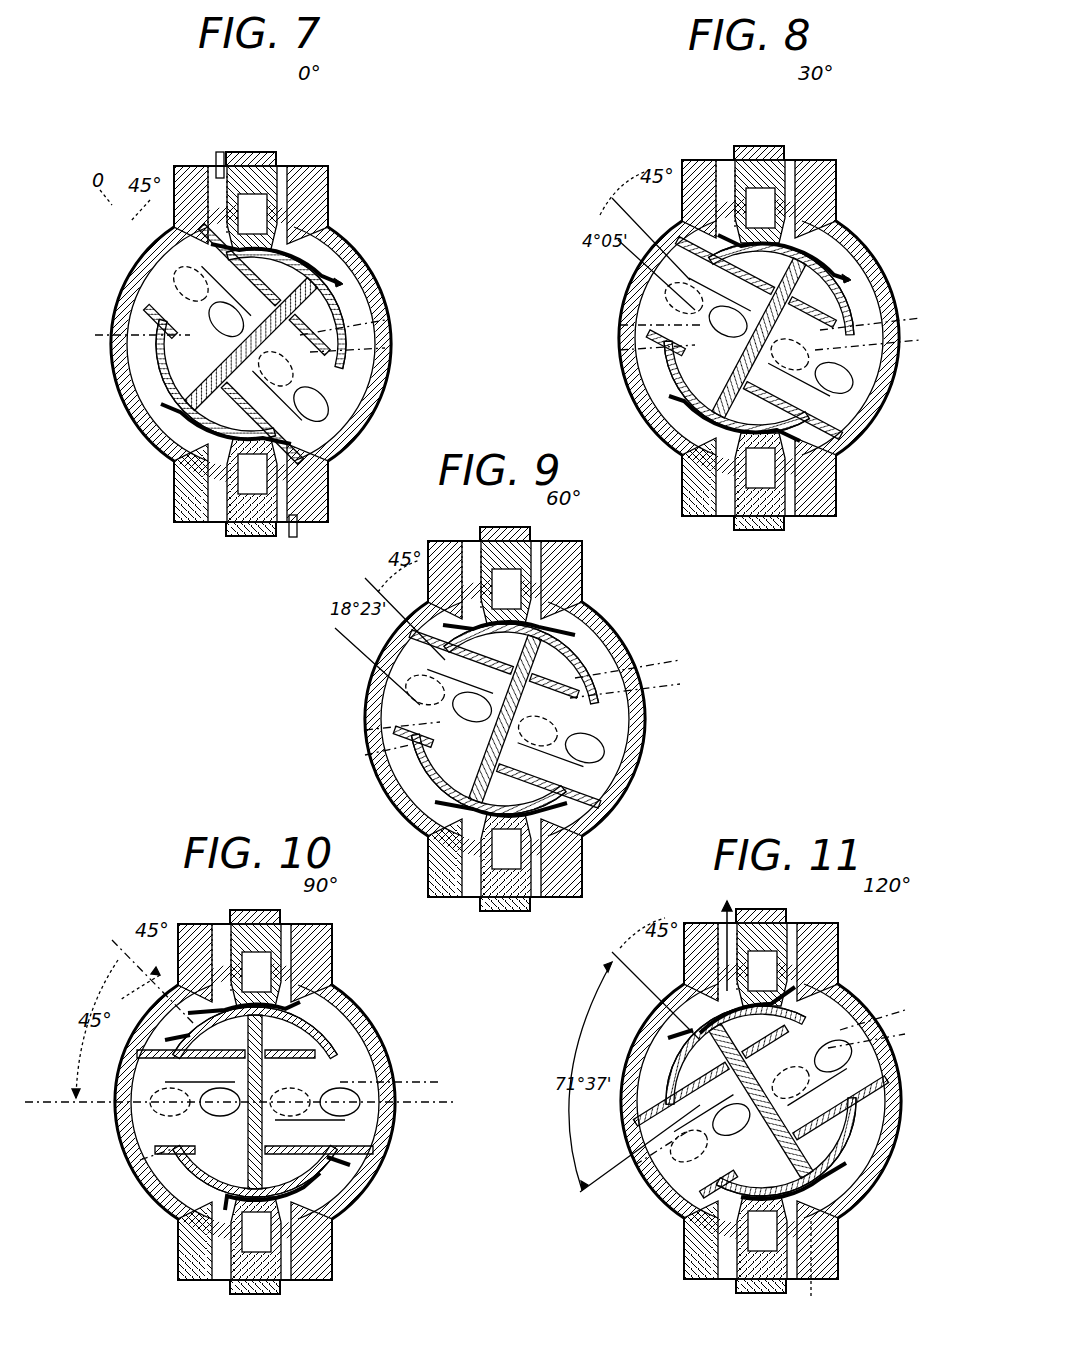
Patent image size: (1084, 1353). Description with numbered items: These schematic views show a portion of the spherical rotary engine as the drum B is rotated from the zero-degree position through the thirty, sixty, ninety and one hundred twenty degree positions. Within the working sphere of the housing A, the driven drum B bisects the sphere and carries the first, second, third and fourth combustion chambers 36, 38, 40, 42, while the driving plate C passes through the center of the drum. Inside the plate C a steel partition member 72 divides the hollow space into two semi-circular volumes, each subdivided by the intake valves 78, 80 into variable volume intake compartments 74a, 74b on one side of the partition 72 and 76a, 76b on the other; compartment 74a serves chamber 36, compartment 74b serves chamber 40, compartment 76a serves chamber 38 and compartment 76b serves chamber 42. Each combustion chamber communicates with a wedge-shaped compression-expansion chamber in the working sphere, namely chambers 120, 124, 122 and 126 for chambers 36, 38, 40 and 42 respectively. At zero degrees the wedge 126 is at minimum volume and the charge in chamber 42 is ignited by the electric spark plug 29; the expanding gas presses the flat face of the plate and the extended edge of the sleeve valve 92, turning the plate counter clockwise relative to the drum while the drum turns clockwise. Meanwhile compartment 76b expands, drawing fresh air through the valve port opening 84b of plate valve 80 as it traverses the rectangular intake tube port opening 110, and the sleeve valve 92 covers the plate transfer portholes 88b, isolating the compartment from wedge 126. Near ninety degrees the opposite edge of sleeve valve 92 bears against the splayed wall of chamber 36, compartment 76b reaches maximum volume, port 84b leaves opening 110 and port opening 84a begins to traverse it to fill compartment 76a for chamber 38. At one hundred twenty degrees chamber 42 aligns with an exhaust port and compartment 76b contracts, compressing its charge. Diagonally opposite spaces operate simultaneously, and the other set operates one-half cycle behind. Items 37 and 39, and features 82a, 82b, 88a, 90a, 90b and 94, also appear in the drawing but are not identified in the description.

In FIG. 7, the electric spark plug 29 is at (222, 158).
In FIG. 7, the first combustion chamber 36 is at (300, 192).
In FIG. 8, the first combustion chamber 36 is at (800, 198).
In FIG. 9, the first combustion chamber 36 is at (545, 580).
In FIG. 10, the first combustion chamber 36 is at (292, 968).
In FIG. 11, the first combustion chamber 36 is at (795, 970).
In FIG. 11, the vent passage 37 is at (722, 920).
In FIG. 7, the second combustion chamber 38 is at (215, 492).
In FIG. 8, the second combustion chamber 38 is at (725, 478).
In FIG. 9, the second combustion chamber 38 is at (470, 862).
In FIG. 10, the second combustion chamber 38 is at (218, 1250).
In FIG. 11, the second combustion chamber 38 is at (725, 1245).
In FIG. 11, the drain passage 39 is at (815, 1290).
In FIG. 7, the third combustion chamber 40 is at (290, 490).
In FIG. 8, the third combustion chamber 40 is at (800, 486).
In FIG. 9, the third combustion chamber 40 is at (548, 862).
In FIG. 10, the third combustion chamber 40 is at (295, 1250).
In FIG. 11, the third combustion chamber 40 is at (805, 1245).
In FIG. 7, the fourth combustion chamber 42 is at (212, 180).
In FIG. 8, the fourth combustion chamber 42 is at (722, 180).
In FIG. 9, the fourth combustion chamber 42 is at (472, 560).
In FIG. 10, the fourth combustion chamber 42 is at (222, 945).
In FIG. 11, the fourth combustion chamber 42 is at (725, 962).
In FIG. 7, the partition member 72 is at (262, 340).
In FIG. 8, the partition member 72 is at (775, 350).
In FIG. 9, the partition member 72 is at (520, 708).
In FIG. 10, the partition member 72 is at (268, 1118).
In FIG. 11, the partition member 72 is at (768, 1068).
In FIG. 7, the intake compartment 74a is at (318, 356).
In FIG. 8, the intake compartment 74a is at (820, 330).
In FIG. 9, the intake compartment 74a is at (575, 678).
In FIG. 10, the intake compartment 74a is at (427, 1081).
In FIG. 11, the intake compartment 74a is at (840, 1030).
In FIG. 7, the intake compartment 74b is at (305, 340).
In FIG. 8, the intake compartment 74b is at (815, 350).
In FIG. 9, the intake compartment 74b is at (570, 698).
In FIG. 10, the intake compartment 74b is at (330, 1080).
In FIG. 11, the intake compartment 74b is at (828, 1048).
In FIG. 7, the intake compartment 76a is at (186, 350).
In FIG. 8, the intake compartment 76a is at (700, 325).
In FIG. 9, the intake compartment 76a is at (440, 722).
In FIG. 10, the intake compartment 76a is at (190, 1120).
In FIG. 11, the intake compartment 76a is at (670, 1120).
In FIG. 7, the intake compartment 76b is at (190, 335).
In FIG. 8, the intake compartment 76b is at (695, 345).
In FIG. 9, the intake compartment 76b is at (342, 754).
In FIG. 10, the intake compartment 76b is at (110, 1180).
In FIG. 11, the intake compartment 76b is at (641, 1153).
In FIG. 7, the intake valve 78 is at (262, 358).
In FIG. 8, the intake valve 78 is at (812, 352).
In FIG. 9, the intake valve 78 is at (560, 742).
In FIG. 10, the intake valve 78 is at (318, 1118).
In FIG. 11, the intake valve 78 is at (832, 1055).
In FIG. 7, the intake valve 80 is at (222, 303).
In FIG. 8, the intake valve 80 is at (742, 328).
In FIG. 9, the intake valve 80 is at (452, 700).
In FIG. 10, the intake valve 80 is at (201, 1089).
In FIG. 11, the intake valve 80 is at (712, 1098).
In FIG. 7, the fast speed rotor port 82a is at (345, 400).
In FIG. 8, the fast speed rotor port 82a is at (800, 395).
In FIG. 9, the fast speed rotor port 82a is at (510, 752).
In FIG. 10, the fast speed rotor port 82a is at (293, 1086).
In FIG. 11, the fast speed rotor port 82a is at (800, 1100).
In FIG. 7, the normal speed rotor port 82b is at (330, 412).
In FIG. 8, the normal speed rotor port 82b is at (845, 418).
In FIG. 9, the normal speed rotor port 82b is at (655, 748).
In FIG. 10, the normal speed rotor port 82b is at (340, 1086).
In FIG. 11, the normal speed rotor port 82b is at (855, 1064).
In FIG. 7, the valve port opening 84a is at (190, 292).
In FIG. 8, the valve port opening 84a is at (745, 318).
In FIG. 9, the valve port opening 84a is at (480, 695).
In FIG. 10, the valve port opening 84a is at (190, 1115).
In FIG. 11, the valve port opening 84a is at (735, 1120).
In FIG. 7, the valve intake port opening 84b is at (165, 282).
In FIG. 8, the valve intake port opening 84b is at (660, 282).
In FIG. 9, the valve intake port opening 84b is at (400, 705).
In FIG. 10, the valve intake port opening 84b is at (150, 1115).
In FIG. 11, the valve intake port opening 84b is at (700, 1140).
In FIG. 7, the rotor sealing surface 88a is at (310, 312).
In FIG. 8, the rotor sealing surface 88a is at (838, 310).
In FIG. 9, the rotor sealing surface 88a is at (565, 665).
In FIG. 10, the rotor sealing surface 88a is at (275, 1030).
In FIG. 11, the rotor sealing surface 88a is at (748, 1015).
In FIG. 7, the plate transfer portholes 88b is at (280, 276).
In FIG. 8, the plate transfer portholes 88b is at (792, 262).
In FIG. 9, the plate transfer portholes 88b is at (525, 645).
In FIG. 10, the plate transfer portholes 88b is at (245, 1030).
In FIG. 11, the plate transfer portholes 88b is at (712, 1040).
In FIG. 7, the rotor chamber 90a is at (225, 380).
In FIG. 8, the rotor chamber 90a is at (722, 378).
In FIG. 9, the rotor chamber 90a is at (478, 760).
In FIG. 10, the rotor chamber 90a is at (245, 1175).
In FIG. 11, the rotor chamber 90a is at (770, 1145).
In FIG. 7, the rotor chamber 90b is at (220, 416).
In FIG. 8, the rotor chamber 90b is at (735, 400).
In FIG. 9, the rotor chamber 90b is at (525, 780).
In FIG. 10, the rotor chamber 90b is at (272, 1175).
In FIG. 11, the rotor chamber 90b is at (812, 1135).
In FIG. 7, the sleeve valve 92 is at (326, 272).
In FIG. 8, the sleeve valve 92 is at (828, 265).
In FIG. 9, the sleeve valve 92 is at (562, 638).
In FIG. 10, the sleeve valve 92 is at (285, 1008).
In FIG. 11, the sleeve valve 92 is at (700, 1040).
In FIG. 7, the lower seal 94 is at (215, 430).
In FIG. 8, the lower seal 94 is at (712, 422).
In FIG. 9, the lower seal 94 is at (462, 805).
In FIG. 10, the lower seal 94 is at (350, 1185).
In FIG. 11, the lower seal 94 is at (825, 1170).
In FIG. 7, the intake tube port opening 110 is at (214, 272).
In FIG. 8, the intake tube port opening 110 is at (690, 245).
In FIG. 9, the intake tube port opening 110 is at (400, 658).
In FIG. 10, the intake tube port opening 110 is at (218, 1072).
In FIG. 11, the intake tube port opening 110 is at (735, 1092).
In FIG. 7, the compression-expansion chamber 120 is at (350, 300).
In FIG. 8, the compression-expansion chamber 120 is at (862, 300).
In FIG. 9, the compression-expansion chamber 120 is at (605, 648).
In FIG. 10, the compression-expansion chamber 120 is at (340, 1015).
In FIG. 11, the compression-expansion chamber 120 is at (850, 1010).
In FIG. 7, the compression-expansion chamber 122 is at (322, 426).
In FIG. 8, the compression-expansion chamber 122 is at (830, 440).
In FIG. 9, the compression-expansion chamber 122 is at (575, 812).
In FIG. 10, the compression-expansion chamber 122 is at (330, 1195).
In FIG. 11, the compression-expansion chamber 122 is at (880, 1120).
In FIG. 7, the compression-expansion chamber 124 is at (137, 400).
In FIG. 8, the compression-expansion chamber 124 is at (650, 372).
In FIG. 9, the compression-expansion chamber 124 is at (400, 782).
In FIG. 10, the compression-expansion chamber 124 is at (185, 1195).
In FIG. 11, the compression-expansion chamber 124 is at (690, 1200).
In FIG. 7, the compression-expansion chamber 126 is at (185, 245).
In FIG. 8, the compression-expansion chamber 126 is at (722, 218).
In FIG. 9, the compression-expansion chamber 126 is at (465, 602).
In FIG. 10, the compression-expansion chamber 126 is at (185, 1025).
In FIG. 11, the compression-expansion chamber 126 is at (670, 1040).
In FIG. 7, the housing A is at (362, 250).
In FIG. 8, the housing A is at (872, 252).
In FIG. 9, the housing A is at (640, 652).
In FIG. 10, the housing A is at (372, 1018).
In FIG. 11, the housing A is at (878, 1010).
In FIG. 7, the drum B is at (282, 190).
In FIG. 8, the drum B is at (790, 188).
In FIG. 9, the drum B is at (538, 570).
In FIG. 10, the drum B is at (285, 958).
In FIG. 11, the drum B is at (812, 962).
In FIG. 7, the plate C is at (370, 385).
In FIG. 8, the plate C is at (870, 372).
In FIG. 9, the plate C is at (625, 712).
In FIG. 10, the plate C is at (375, 1040).
In FIG. 11, the plate C is at (880, 1100).